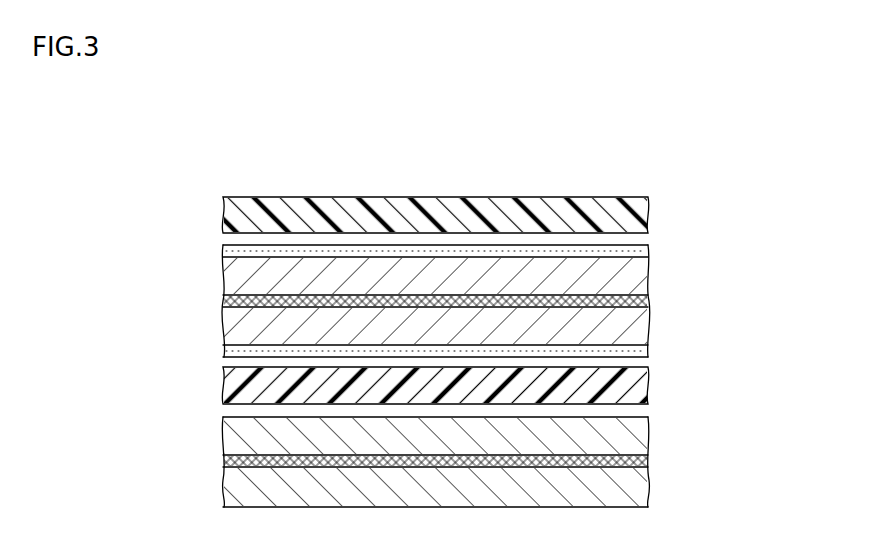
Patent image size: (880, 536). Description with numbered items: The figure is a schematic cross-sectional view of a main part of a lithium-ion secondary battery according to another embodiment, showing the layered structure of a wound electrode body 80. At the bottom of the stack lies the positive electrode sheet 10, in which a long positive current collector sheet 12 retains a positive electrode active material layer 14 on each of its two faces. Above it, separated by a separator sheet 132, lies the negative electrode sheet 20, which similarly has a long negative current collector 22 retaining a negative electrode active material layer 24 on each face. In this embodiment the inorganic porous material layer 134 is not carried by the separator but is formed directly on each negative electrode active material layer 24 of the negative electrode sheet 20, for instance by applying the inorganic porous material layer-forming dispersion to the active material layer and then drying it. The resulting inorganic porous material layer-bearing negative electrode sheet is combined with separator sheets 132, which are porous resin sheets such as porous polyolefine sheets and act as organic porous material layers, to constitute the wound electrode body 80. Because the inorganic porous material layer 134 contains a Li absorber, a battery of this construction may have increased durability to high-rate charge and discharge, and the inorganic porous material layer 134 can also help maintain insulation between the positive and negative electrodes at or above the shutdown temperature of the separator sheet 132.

The wound electrode body 80 is at (596, 160).
The positive electrode sheet 10 is at (134, 422).
The positive current collector sheet 12 is at (223, 460).
The positive electrode active material layer 14 is at (223, 430).
The negative electrode sheet 20 is at (134, 253).
The negative current collector 22 is at (223, 302).
The negative electrode active material layer 24 is at (223, 281).
The separator sheet 132 is at (650, 213).
The inorganic porous material layer 134 is at (650, 252).